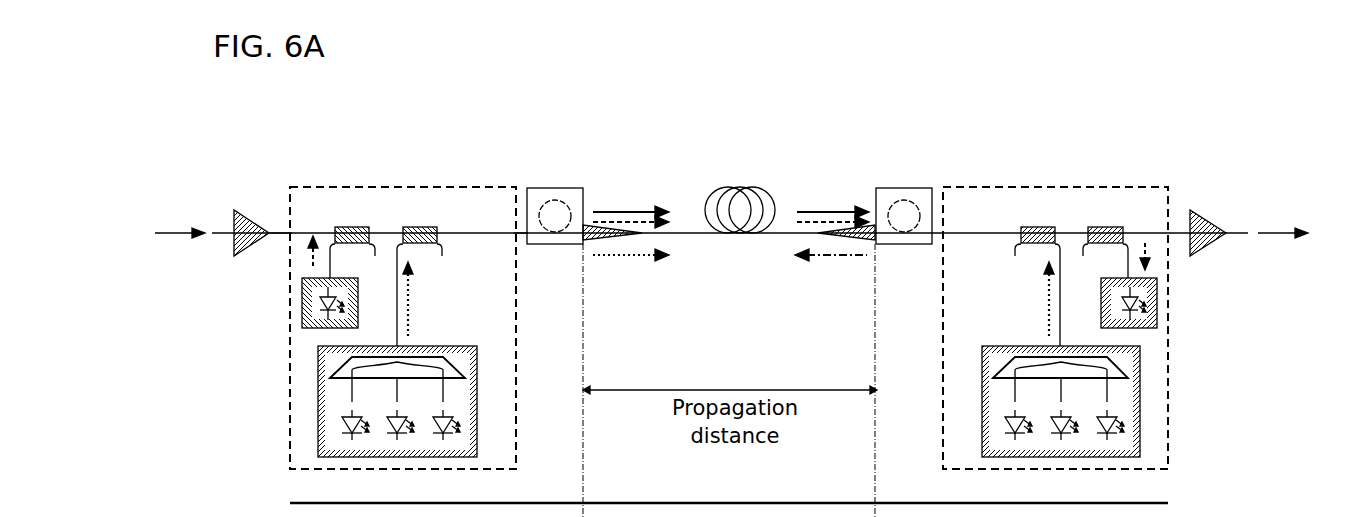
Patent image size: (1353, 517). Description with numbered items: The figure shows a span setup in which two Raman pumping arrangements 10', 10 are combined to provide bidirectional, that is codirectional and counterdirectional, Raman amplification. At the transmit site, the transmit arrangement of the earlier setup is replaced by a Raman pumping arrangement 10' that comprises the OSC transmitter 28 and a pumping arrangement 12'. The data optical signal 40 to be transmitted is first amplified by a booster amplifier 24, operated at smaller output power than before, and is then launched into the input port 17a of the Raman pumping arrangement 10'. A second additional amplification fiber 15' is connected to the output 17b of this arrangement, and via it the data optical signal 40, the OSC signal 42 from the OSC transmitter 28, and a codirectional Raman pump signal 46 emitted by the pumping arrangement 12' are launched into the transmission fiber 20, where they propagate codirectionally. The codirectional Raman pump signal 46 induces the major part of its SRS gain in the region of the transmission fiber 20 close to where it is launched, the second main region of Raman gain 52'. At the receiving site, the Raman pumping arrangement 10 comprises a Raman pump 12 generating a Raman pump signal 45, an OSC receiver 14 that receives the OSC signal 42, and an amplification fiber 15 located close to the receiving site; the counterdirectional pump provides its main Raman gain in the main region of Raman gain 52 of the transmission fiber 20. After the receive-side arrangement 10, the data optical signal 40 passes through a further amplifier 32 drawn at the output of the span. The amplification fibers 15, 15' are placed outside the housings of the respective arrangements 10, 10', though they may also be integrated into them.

The Raman pumping arrangement 10 is at (1026, 328).
The Raman pumping arrangement 10' is at (433, 328).
The Raman pump 12 is at (1021, 385).
The pumping arrangement 12' is at (440, 401).
The OSC receiver 14 is at (1158, 312).
The amplification fiber 15 is at (923, 177).
The second amplification fiber 15' is at (535, 171).
The input port 17a is at (290, 252).
The output 17b is at (516, 246).
The transmission fiber 20 is at (740, 177).
The booster amplifier 24 is at (246, 210).
The OSC transmitter 28 is at (302, 328).
The output optical amplifier 32 is at (1210, 215).
The data optical signal 40 is at (180, 232).
The OSC signal 42 is at (315, 236).
The Raman pump signal 45 is at (822, 258).
The codirectional Raman pump signal 46 is at (411, 320).
The main region of Raman gain 52 is at (846, 283).
The second main region of Raman gain 52' is at (612, 283).